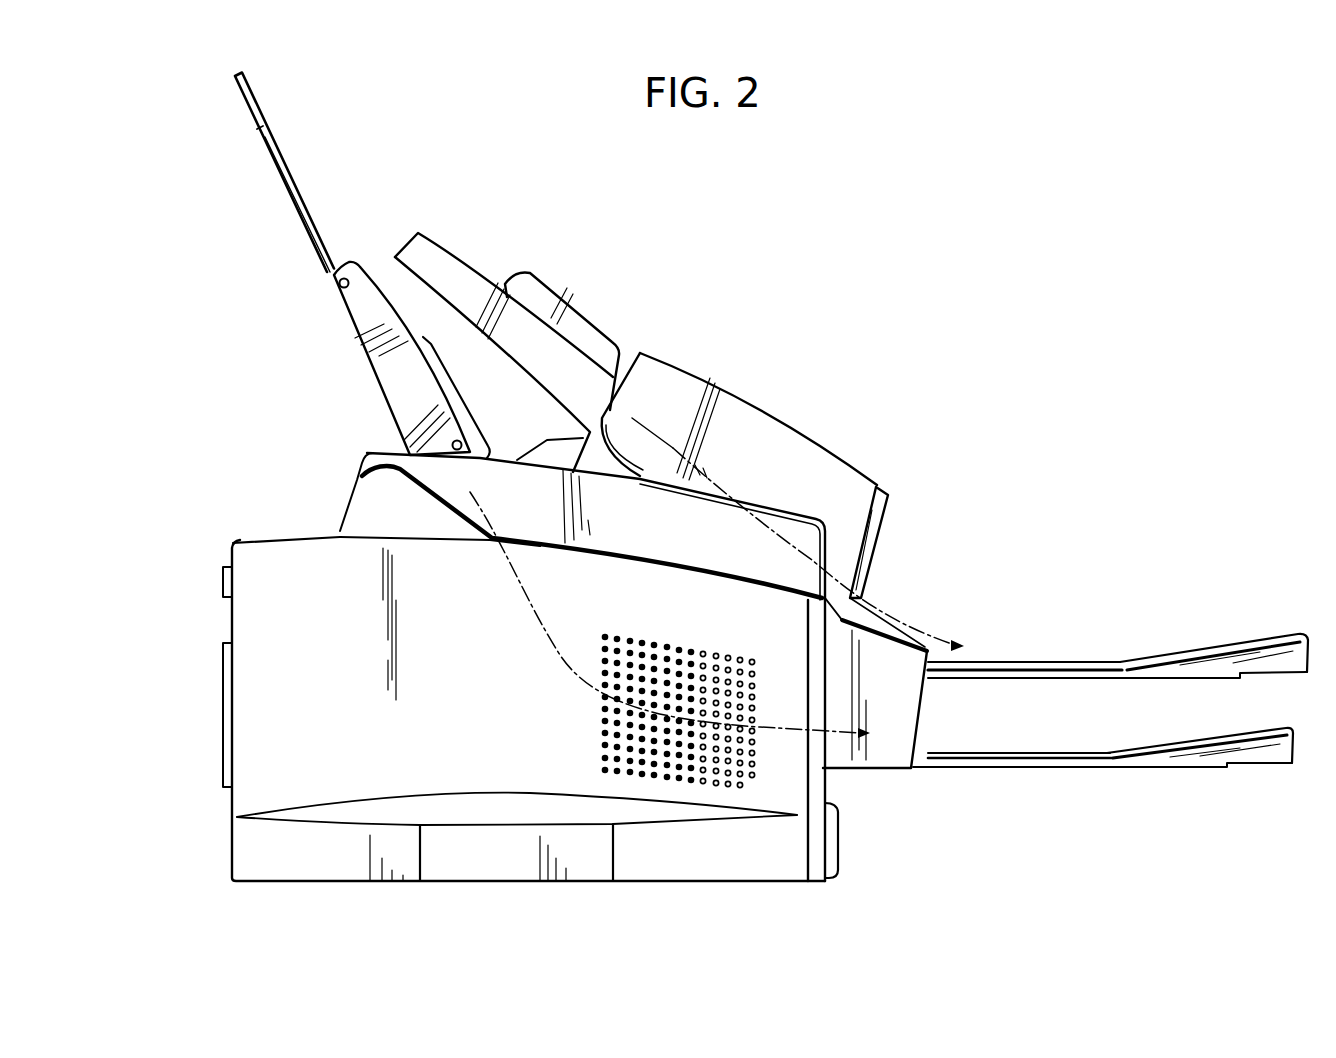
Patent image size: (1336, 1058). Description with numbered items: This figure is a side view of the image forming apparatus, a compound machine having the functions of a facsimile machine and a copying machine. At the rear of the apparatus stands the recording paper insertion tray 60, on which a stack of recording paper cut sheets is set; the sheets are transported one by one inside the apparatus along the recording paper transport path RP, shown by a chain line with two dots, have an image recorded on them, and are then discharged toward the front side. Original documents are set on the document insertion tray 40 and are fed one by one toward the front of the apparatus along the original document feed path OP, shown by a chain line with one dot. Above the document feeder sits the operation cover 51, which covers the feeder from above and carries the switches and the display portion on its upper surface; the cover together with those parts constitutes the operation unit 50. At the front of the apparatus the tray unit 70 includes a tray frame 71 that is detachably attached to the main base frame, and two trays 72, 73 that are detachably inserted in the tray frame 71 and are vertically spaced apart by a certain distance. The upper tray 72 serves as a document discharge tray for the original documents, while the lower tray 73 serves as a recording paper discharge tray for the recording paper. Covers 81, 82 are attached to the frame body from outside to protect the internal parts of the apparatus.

The document insertion tray 40 is at (460, 270).
The operation unit 50 is at (791, 375).
The operation cover 51 is at (832, 458).
The recording paper insertion tray 60 is at (293, 192).
The tray unit 70 is at (1065, 743).
The tray frame 71 is at (890, 748).
The upper tray 72 is at (1020, 680).
The lower tray 73 is at (893, 826).
The cover 81 is at (512, 852).
The cover 82 is at (360, 468).
The recording paper transport path RP is at (556, 648).
The original document feed path OP is at (934, 640).